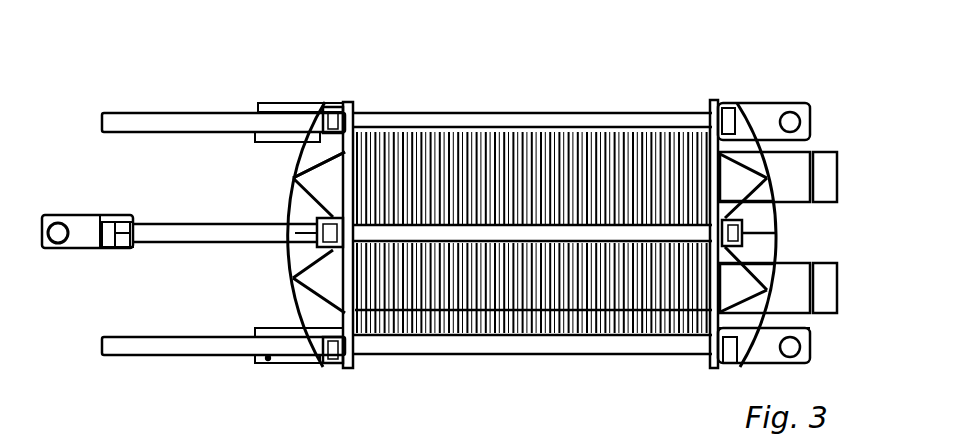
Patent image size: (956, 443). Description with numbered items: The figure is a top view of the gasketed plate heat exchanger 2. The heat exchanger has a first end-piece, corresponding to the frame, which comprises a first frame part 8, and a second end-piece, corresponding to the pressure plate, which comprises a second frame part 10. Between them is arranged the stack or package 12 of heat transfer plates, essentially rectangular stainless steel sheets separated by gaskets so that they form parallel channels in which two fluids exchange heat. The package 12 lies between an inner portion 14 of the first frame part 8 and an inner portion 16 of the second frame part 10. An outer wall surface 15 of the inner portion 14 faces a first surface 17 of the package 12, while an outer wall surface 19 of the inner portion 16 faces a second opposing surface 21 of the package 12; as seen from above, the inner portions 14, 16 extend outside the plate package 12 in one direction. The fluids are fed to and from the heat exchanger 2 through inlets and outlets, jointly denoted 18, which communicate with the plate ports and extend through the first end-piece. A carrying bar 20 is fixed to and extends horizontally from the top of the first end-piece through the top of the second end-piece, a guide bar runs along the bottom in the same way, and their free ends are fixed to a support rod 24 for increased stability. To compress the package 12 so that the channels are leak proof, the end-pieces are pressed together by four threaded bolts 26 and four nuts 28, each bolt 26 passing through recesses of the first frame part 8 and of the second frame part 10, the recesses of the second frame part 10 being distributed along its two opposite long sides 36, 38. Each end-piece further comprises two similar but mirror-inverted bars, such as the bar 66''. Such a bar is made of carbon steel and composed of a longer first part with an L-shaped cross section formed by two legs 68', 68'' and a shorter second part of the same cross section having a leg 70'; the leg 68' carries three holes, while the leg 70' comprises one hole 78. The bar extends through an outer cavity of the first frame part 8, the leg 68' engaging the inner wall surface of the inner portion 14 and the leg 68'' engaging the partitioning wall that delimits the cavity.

The gasketed plate heat exchanger 2 is at (603, 53).
The first frame part 8 is at (780, 228).
The second frame part 10 is at (285, 254).
The package of heat transfer plates 12 is at (511, 128).
The inner portion of the first frame part 14 is at (714, 102).
The outer wall surface of the inner portion of the first frame part 15 is at (709, 104).
The inner portion of the second frame part 16 is at (352, 368).
The first surface of the plate package 17 is at (775, 180).
The inlets and outlets 18 is at (790, 297).
The outer wall surface of the inner portion of the second frame part 19 is at (357, 100).
The carrying bar 20 is at (250, 227).
The second opposing surface of the plate package 21 is at (342, 184).
The support rod 24 is at (82, 215).
The threaded bolts 26 is at (132, 122).
The nuts 28 is at (300, 363).
The long side of the second frame part 36 is at (332, 370).
The long side of the second frame part 38 is at (328, 100).
The bar 66'' is at (202, 314).
The leg of the first part of the bar 68' is at (672, 380).
The leg of the first part of the bar 68'' is at (818, 319).
The leg of the second part of the bar 70' is at (804, 361).
The hole 78 is at (818, 346).